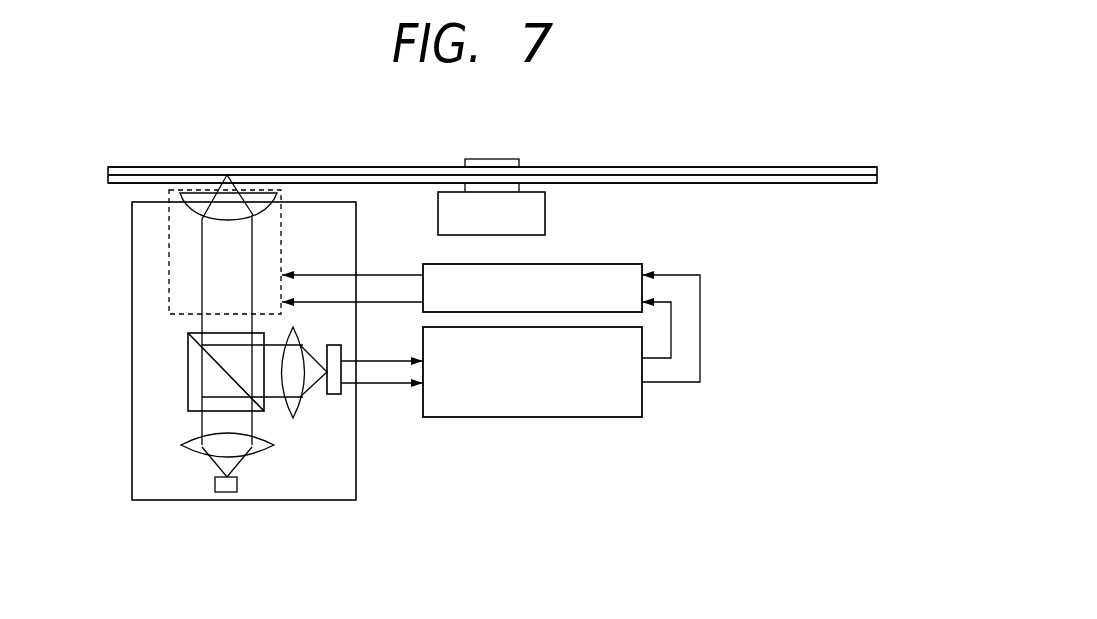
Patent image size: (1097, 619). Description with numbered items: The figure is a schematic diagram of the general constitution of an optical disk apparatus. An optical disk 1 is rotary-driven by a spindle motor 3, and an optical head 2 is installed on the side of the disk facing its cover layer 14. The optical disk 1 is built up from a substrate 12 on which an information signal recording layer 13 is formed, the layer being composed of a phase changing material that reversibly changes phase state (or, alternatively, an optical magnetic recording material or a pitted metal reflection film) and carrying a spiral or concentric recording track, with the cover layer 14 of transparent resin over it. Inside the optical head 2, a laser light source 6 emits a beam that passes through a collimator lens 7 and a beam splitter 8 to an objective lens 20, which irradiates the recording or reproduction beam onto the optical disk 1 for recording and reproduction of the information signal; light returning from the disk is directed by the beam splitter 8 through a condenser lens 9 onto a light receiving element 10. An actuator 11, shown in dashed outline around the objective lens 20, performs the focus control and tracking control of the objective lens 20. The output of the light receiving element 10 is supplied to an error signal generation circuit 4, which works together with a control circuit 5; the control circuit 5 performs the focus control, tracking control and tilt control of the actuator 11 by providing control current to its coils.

The optical disk 1 is at (805, 158).
The optical head 2 is at (160, 490).
The spindle motor 3 is at (537, 212).
The error signal generation circuit 4 is at (536, 418).
The control circuit 5 is at (540, 264).
The laser light source 6 is at (228, 485).
The collimator lens 7 is at (190, 450).
The beam splitter 8 is at (190, 381).
The condenser lens 9 is at (303, 416).
The light receiving element 10 is at (335, 395).
The actuator 11 is at (169, 289).
The substrate 12 is at (730, 172).
The information signal recording layer 13 is at (783, 177).
The cover layer 14 is at (725, 184).
The objective lens 20 is at (225, 210).